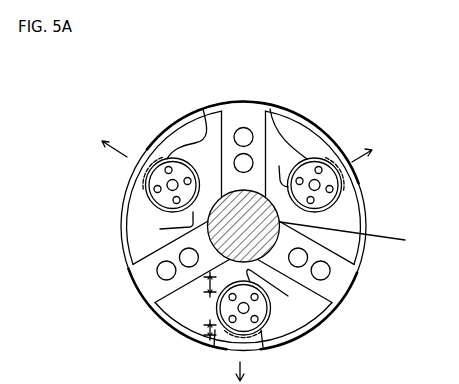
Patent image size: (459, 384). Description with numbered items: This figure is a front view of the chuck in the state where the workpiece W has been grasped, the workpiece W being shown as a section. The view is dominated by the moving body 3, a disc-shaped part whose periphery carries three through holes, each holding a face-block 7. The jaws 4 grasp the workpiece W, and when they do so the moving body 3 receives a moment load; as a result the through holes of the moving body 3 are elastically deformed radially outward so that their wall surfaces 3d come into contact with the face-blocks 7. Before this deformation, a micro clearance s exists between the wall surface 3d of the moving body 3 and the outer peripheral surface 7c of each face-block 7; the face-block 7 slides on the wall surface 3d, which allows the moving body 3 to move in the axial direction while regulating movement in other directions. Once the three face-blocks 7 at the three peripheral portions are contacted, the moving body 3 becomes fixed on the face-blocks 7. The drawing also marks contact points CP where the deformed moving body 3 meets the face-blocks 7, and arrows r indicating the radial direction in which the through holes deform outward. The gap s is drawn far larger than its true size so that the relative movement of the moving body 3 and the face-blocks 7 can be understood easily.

The moving body 3 is at (306, 117).
The wall surface 3d is at (162, 146).
The jaws 4 is at (239, 106).
The face-block 7 is at (357, 194).
The outer peripheral surface 7c is at (201, 108).
The connection point CP is at (225, 230).
The micro clearance s is at (203, 306).
The workpiece w is at (348, 235).
The radial direction r is at (237, 260).